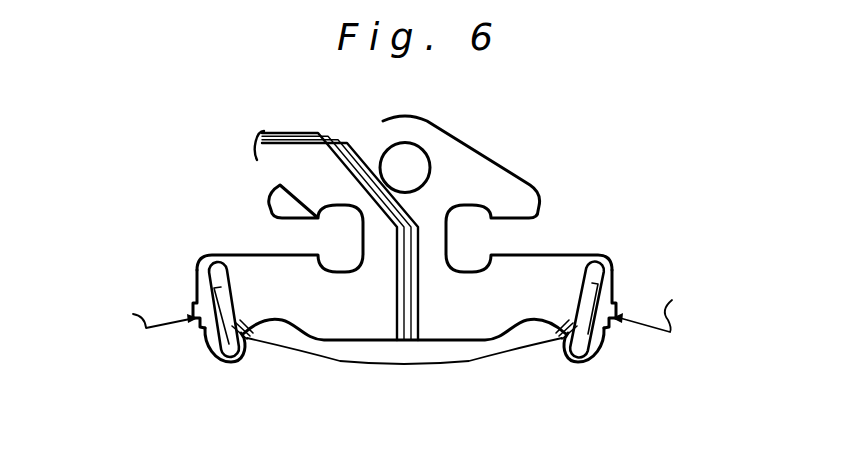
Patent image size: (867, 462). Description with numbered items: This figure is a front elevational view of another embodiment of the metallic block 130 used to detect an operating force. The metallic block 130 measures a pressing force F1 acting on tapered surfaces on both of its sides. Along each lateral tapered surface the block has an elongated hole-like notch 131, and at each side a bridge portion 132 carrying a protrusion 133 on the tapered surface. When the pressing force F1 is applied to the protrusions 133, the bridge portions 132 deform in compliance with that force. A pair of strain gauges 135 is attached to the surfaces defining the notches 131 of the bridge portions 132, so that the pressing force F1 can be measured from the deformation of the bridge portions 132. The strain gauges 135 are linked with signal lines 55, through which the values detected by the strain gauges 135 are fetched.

The metallic block 130 is at (515, 150).
The elongated hole-like notches 131 is at (230, 363).
The bridge portions 132 is at (208, 340).
The protrusions 133 is at (192, 310).
The strain gauges 135 is at (222, 298).
The signal lines 55 is at (423, 342).
The pressing force F1 is at (415, 302).